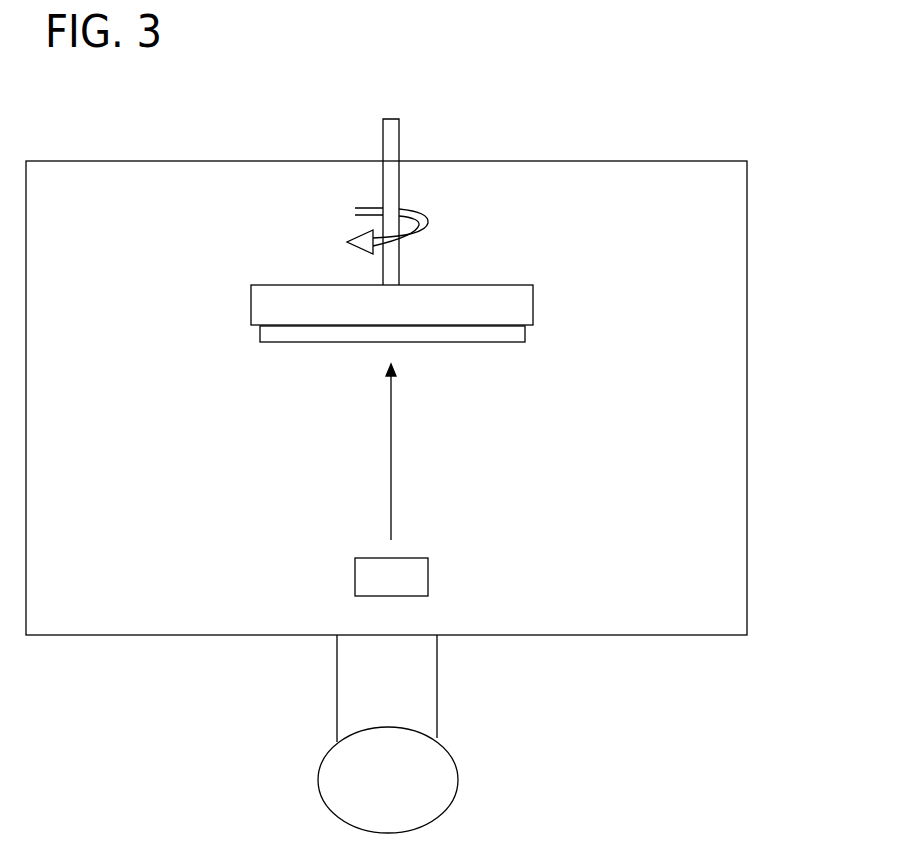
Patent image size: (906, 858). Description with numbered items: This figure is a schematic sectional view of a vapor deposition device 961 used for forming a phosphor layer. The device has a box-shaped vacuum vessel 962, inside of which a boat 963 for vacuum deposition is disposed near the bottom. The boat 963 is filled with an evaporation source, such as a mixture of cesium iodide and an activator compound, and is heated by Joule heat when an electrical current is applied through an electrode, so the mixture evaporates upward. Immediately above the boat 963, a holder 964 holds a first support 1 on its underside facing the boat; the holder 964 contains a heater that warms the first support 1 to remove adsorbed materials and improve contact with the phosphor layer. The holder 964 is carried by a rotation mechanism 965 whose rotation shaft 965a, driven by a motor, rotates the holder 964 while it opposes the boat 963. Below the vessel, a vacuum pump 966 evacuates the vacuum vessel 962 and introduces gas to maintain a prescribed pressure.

The vapor deposition device 961 is at (450, 112).
The vacuum vessel 962 is at (747, 277).
The boat 963 is at (430, 575).
The holder 964 is at (533, 300).
The first support 1 is at (525, 331).
The rotation mechanism 965 is at (412, 196).
The rotation shaft 965a is at (383, 186).
The vacuum pump 966 is at (458, 778).